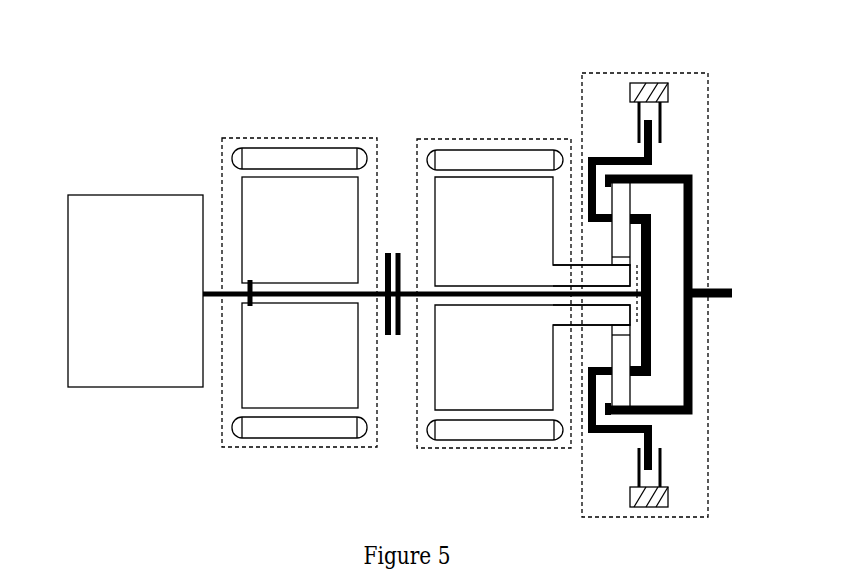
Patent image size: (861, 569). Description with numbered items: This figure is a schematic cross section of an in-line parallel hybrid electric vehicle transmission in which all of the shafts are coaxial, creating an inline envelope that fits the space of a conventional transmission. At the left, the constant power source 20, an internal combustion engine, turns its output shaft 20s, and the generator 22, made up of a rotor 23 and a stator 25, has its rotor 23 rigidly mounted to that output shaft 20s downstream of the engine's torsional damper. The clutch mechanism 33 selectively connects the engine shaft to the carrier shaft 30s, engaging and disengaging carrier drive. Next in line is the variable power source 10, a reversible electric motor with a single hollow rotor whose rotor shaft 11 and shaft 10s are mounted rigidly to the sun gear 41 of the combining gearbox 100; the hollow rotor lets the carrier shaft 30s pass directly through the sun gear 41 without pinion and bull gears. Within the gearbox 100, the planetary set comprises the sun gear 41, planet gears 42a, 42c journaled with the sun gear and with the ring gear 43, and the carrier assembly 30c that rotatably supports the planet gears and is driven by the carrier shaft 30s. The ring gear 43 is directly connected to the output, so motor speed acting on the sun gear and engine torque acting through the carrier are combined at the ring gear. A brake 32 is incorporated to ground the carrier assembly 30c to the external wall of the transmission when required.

The constant power source 20 is at (118, 342).
The output shaft 20s is at (245, 237).
The generator 22 is at (299, 269).
The rotor 23 is at (282, 259).
The stator 25 is at (254, 281).
The clutch mechanism 33 is at (341, 391).
The variable power source 10 is at (494, 270).
The rotor shaft 11 is at (507, 261).
The shaft of variable power source 10s is at (564, 199).
The carrier shaft 30s is at (524, 392).
The power combining collection transmission system 100 is at (632, 273).
The brake 32 is at (686, 277).
The planet gear 42a is at (687, 166).
The planet gear 42c is at (687, 424).
The sun gear 41 is at (582, 356).
The ring gear 43 is at (691, 284).
The carrier assembly 30c is at (706, 295).